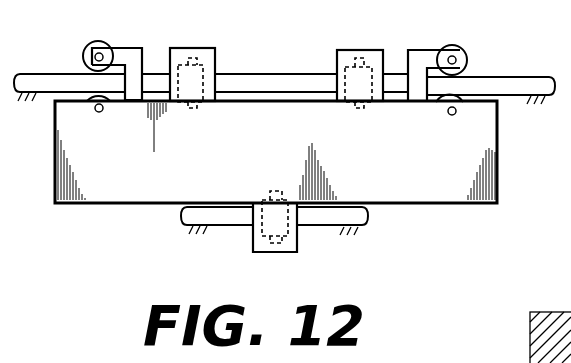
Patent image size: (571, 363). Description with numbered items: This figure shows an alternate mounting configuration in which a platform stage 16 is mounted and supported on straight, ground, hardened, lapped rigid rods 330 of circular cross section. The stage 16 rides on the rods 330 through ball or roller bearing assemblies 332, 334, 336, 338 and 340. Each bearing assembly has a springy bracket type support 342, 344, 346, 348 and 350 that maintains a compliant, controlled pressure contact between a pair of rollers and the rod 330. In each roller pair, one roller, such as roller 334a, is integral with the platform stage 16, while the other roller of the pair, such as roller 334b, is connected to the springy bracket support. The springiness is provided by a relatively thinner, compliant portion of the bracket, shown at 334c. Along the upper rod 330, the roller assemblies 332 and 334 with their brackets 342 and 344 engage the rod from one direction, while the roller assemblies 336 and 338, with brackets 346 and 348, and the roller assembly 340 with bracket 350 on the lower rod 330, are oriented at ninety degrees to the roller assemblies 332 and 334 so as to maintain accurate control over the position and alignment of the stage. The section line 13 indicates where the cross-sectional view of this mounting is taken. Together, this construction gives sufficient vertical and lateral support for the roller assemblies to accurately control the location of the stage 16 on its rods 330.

The section line 13 is at (416, 160).
The platform stage 16 is at (499, 140).
The rigid rod 330 is at (238, 75).
The roller bearing assembly 332 is at (80, 48).
The roller bearing assembly 334 is at (488, 83).
The roller 334a is at (449, 103).
The roller 334b is at (468, 62).
The compliant portion of bracket 334c is at (421, 49).
The roller bearing assembly 336 is at (221, 56).
The roller bearing assembly 338 is at (348, 47).
The roller bearing assembly 340 is at (270, 260).
The springy bracket type support 342 is at (132, 47).
The springy bracket type support 344 is at (417, 96).
The springy bracket type support 346 is at (193, 47).
The springy bracket type support 348 is at (360, 53).
The springy bracket type support 350 is at (257, 245).